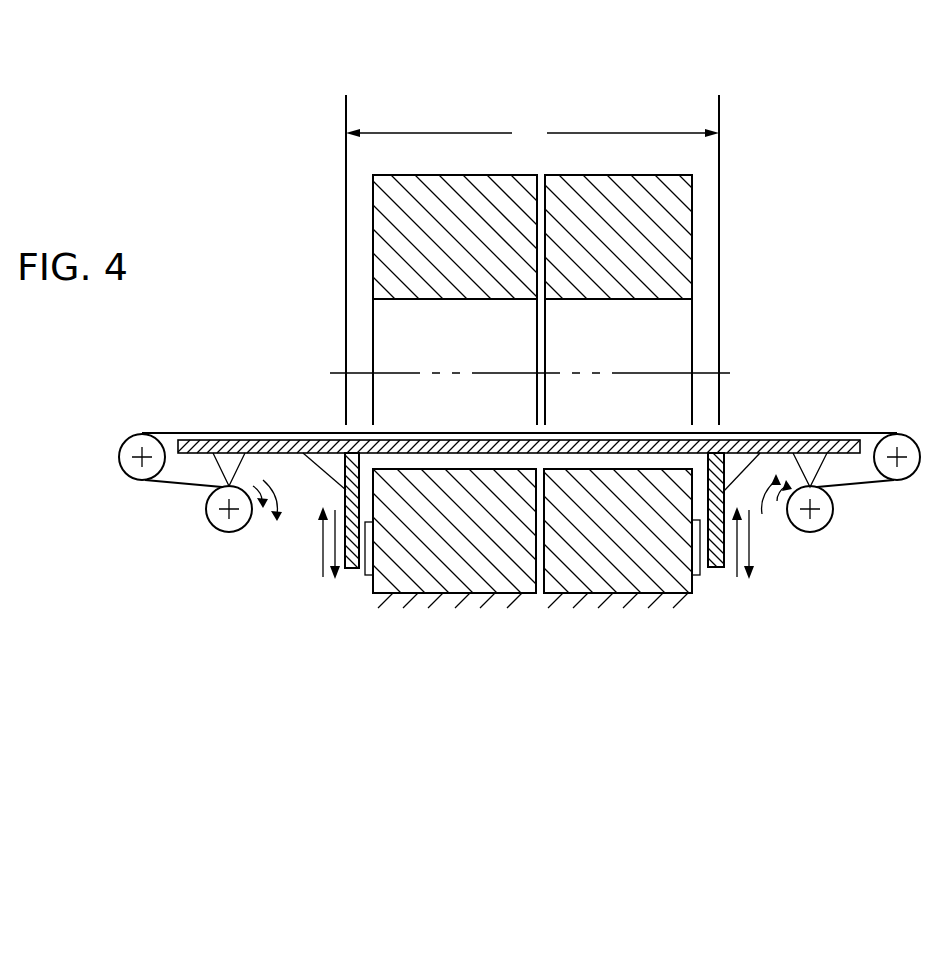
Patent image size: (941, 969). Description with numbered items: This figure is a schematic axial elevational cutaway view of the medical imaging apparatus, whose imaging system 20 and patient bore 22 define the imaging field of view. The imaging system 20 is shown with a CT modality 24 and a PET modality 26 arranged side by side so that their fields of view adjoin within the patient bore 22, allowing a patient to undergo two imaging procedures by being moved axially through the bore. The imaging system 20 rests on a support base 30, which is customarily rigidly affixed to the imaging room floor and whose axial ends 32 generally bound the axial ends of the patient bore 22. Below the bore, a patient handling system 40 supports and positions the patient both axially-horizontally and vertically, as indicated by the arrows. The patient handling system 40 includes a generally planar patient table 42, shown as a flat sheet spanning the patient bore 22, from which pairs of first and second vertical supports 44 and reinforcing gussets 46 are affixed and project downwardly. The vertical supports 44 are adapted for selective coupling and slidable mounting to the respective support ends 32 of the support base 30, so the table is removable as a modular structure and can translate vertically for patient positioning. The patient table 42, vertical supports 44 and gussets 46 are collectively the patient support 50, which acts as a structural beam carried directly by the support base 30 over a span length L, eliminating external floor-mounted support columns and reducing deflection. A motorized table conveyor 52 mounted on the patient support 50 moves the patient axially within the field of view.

The imaging system 20 is at (743, 212).
The patient bore 22 is at (445, 332).
The CT modality 24 is at (415, 215).
The PET modality 26 is at (652, 197).
The support base 30 is at (529, 608).
The axial ends 32 is at (365, 575).
The patient handling system 40 is at (300, 604).
The patient table 42 is at (627, 443).
The vertical supports 44 is at (340, 492).
The reinforcing gussets 46 is at (333, 467).
The patient support 50 is at (256, 400).
The table conveyor 52 is at (182, 436).